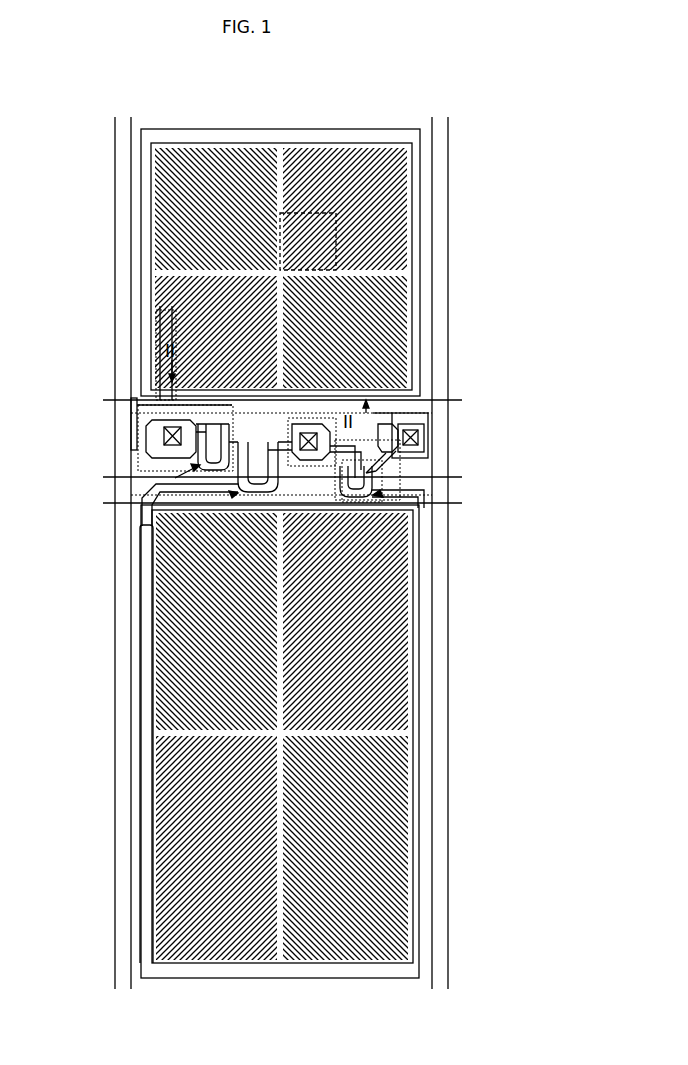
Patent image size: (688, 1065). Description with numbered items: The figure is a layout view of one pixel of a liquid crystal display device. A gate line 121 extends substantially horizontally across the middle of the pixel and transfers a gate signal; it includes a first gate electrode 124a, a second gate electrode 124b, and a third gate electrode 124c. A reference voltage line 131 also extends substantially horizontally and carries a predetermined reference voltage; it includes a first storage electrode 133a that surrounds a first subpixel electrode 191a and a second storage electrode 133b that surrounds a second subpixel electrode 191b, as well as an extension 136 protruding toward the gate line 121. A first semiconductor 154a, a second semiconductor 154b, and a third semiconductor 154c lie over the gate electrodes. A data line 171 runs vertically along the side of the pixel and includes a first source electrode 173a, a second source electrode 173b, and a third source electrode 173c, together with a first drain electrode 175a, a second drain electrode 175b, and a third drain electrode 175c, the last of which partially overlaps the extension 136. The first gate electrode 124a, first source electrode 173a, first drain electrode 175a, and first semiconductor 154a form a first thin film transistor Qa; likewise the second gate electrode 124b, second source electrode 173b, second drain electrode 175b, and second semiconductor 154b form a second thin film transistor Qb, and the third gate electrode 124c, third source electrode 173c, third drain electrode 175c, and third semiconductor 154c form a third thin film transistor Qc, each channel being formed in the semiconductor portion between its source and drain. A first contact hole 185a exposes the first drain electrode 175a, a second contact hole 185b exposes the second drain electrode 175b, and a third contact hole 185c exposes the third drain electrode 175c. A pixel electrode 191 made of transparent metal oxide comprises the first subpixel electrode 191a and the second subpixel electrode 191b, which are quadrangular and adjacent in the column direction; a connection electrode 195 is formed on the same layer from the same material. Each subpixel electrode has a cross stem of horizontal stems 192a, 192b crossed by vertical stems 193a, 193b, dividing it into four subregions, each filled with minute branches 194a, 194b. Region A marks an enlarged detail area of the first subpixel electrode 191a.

The data line 171 is at (131, 159).
The gate line 121 is at (107, 493).
The reference voltage line 131 is at (462, 402).
The first storage electrode 133a is at (423, 182).
The second storage electrode 133b is at (423, 804).
The extension 136 is at (430, 425).
The first gate electrode 124a is at (166, 378).
The second gate electrode 124b is at (170, 318).
The third gate electrode 124c is at (400, 480).
The first semiconductor 154a is at (168, 358).
The second semiconductor 154b is at (170, 338).
The third semiconductor 154c is at (360, 500).
The first source electrode 173a is at (148, 452).
The second source electrode 173b is at (262, 482).
The third source electrode 173c is at (397, 458).
The first drain electrode 175a is at (137, 407).
The second drain electrode 175b is at (240, 481).
The third drain electrode 175c is at (400, 497).
The first contact hole 185a is at (163, 436).
The second contact hole 185b is at (318, 426).
The third contact hole 185c is at (421, 433).
The pixel electrode 191 is at (329, 561).
The first subpixel electrode 191a is at (308, 555).
The second subpixel electrode 191b is at (311, 770).
The horizontal stem 192a is at (387, 270).
The horizontal stem 192b is at (387, 735).
The vertical stem 193a is at (282, 167).
The vertical stem 193b is at (334, 757).
The minute branches 194a is at (337, 197).
The minute branches 194b is at (240, 774).
The connection electrode 195 is at (396, 447).
The first thin film transistor Qa is at (196, 467).
The second thin film transistor Qb is at (234, 494).
The third thin film transistor Qc is at (378, 496).
The region A is at (337, 233).